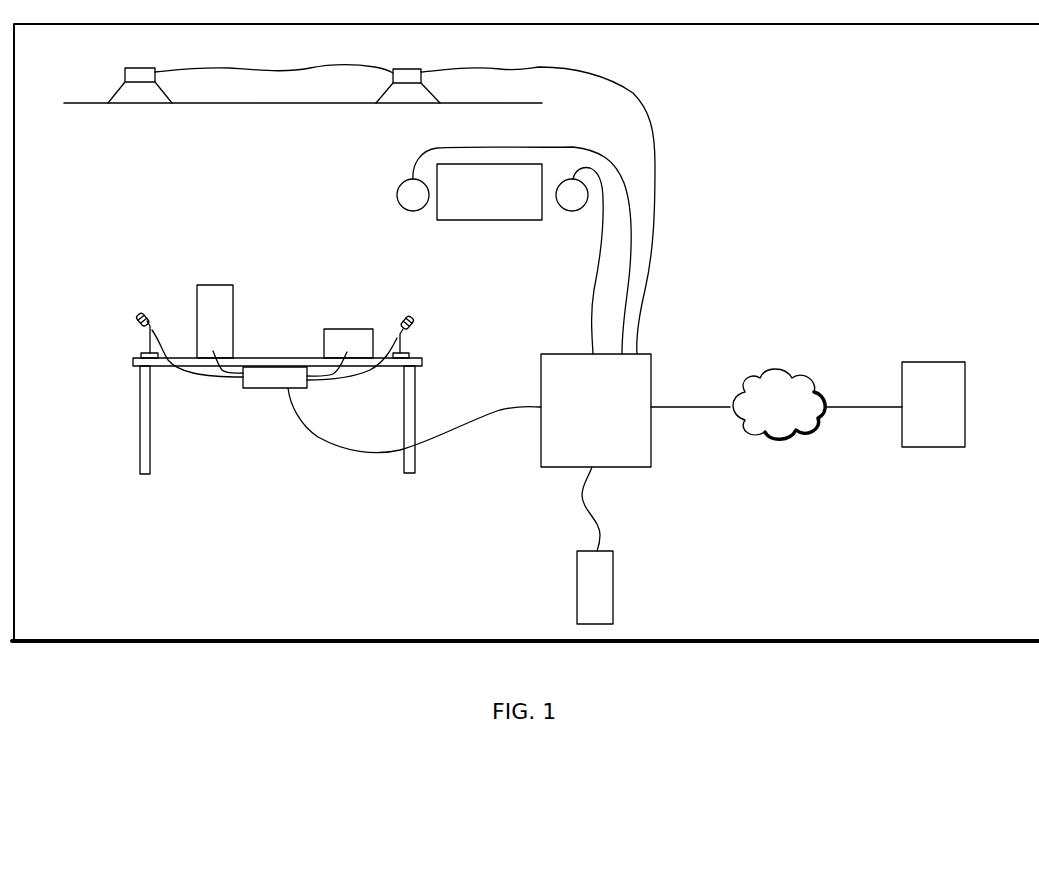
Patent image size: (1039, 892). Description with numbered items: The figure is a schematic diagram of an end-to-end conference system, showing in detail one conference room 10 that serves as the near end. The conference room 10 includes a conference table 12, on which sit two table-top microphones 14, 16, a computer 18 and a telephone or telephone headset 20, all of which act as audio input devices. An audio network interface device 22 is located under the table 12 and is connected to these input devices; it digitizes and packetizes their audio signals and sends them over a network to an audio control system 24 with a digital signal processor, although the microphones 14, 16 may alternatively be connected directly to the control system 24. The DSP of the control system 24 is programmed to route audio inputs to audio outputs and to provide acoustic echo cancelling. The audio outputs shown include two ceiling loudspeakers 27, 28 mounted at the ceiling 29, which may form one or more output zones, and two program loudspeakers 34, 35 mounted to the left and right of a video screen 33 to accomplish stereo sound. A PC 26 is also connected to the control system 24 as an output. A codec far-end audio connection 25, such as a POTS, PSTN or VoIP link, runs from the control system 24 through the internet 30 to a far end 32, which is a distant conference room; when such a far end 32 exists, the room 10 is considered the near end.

The conference room 10 is at (525, 332).
The conference table 12 is at (132, 362).
The table-top microphone 14 is at (146, 333).
The table-top microphone 16 is at (411, 329).
The computer 18 is at (207, 285).
The telephone headset 20 is at (352, 329).
The audio network interface device 22 is at (268, 388).
The audio control system 24 is at (596, 410).
The codec far-end audio connection 25 is at (693, 407).
The PC 26 is at (577, 585).
The ceiling loudspeaker 27 is at (130, 97).
The ceiling loudspeaker 28 is at (396, 97).
The ceiling 29 is at (275, 103).
The internet 30 is at (814, 395).
The far end 32 is at (965, 407).
The video screen 33 is at (468, 220).
The program loudspeaker 34 is at (397, 195).
The program loudspeaker 35 is at (568, 211).